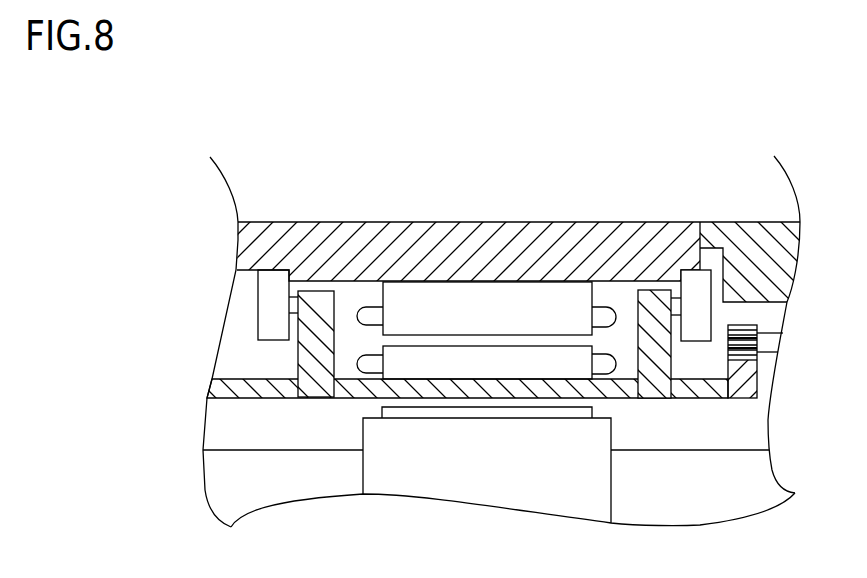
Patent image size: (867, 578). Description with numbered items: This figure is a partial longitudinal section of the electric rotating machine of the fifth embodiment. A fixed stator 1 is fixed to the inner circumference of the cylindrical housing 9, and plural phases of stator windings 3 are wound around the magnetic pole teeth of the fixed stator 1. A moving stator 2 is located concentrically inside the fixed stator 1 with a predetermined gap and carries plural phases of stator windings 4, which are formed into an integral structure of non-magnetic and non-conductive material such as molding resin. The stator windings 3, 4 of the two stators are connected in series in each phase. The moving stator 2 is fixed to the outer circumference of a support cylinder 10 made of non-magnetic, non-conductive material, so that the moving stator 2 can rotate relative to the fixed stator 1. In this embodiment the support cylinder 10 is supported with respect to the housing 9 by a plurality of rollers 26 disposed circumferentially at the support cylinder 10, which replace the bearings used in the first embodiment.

The fixed stator 1 is at (462, 303).
The moving stator 2 is at (525, 353).
The stator windings 3 is at (375, 315).
The stator windings 4 is at (600, 365).
The housing 9 is at (543, 253).
The support cylinder 10 is at (318, 303).
The rollers 26 is at (705, 283).